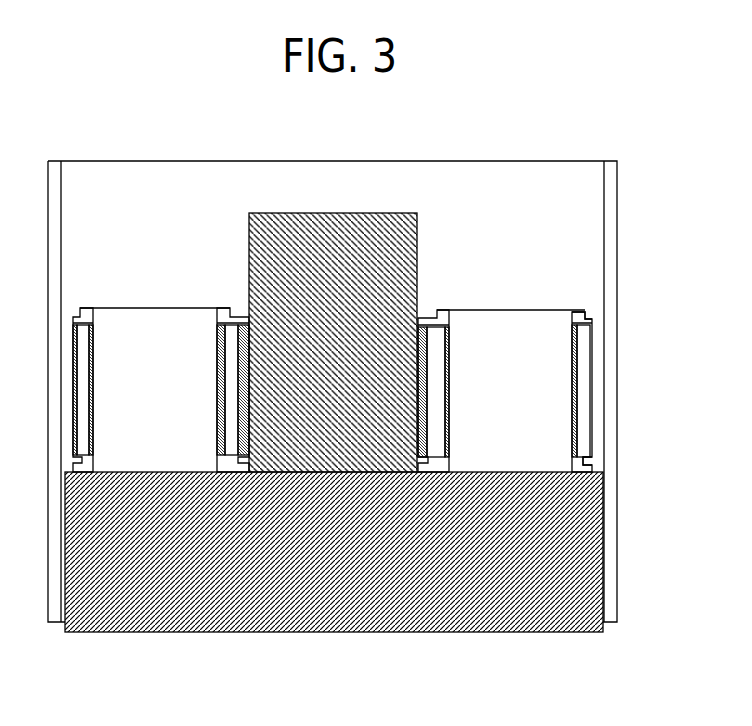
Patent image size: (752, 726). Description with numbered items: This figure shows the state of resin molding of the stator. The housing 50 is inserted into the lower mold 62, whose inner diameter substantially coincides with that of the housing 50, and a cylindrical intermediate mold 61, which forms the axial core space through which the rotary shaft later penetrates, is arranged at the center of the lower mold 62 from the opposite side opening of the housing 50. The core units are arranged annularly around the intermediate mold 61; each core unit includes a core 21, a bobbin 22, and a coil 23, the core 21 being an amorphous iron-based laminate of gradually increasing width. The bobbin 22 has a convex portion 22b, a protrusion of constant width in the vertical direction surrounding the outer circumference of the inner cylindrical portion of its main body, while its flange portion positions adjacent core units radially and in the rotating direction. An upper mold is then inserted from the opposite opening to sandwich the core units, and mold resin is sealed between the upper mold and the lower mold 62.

The housing 50 is at (612, 233).
The intermediate mold 61 is at (418, 223).
The lower mold 62 is at (583, 628).
The core 21 is at (507, 310).
The bobbin 22 is at (583, 316).
The convex portion 22b is at (581, 465).
The coil 23 is at (585, 362).